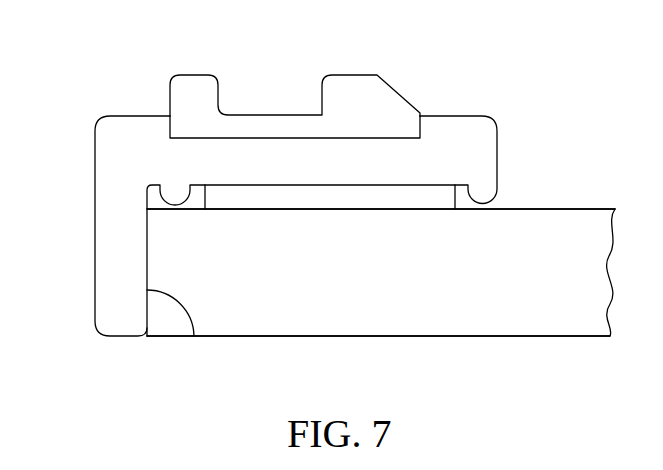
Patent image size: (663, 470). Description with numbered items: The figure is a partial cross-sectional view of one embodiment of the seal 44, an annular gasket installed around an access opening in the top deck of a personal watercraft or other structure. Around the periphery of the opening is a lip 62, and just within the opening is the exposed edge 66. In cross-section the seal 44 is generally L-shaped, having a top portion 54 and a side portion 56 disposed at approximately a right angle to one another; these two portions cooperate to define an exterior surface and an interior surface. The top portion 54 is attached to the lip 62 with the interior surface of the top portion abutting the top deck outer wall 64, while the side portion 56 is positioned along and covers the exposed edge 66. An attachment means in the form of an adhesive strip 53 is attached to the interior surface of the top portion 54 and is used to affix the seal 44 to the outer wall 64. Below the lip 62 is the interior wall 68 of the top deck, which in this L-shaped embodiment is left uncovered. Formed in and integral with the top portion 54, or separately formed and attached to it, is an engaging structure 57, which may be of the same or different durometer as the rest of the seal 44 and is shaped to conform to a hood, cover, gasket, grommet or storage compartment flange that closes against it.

The seal 44 is at (264, 181).
The adhesive strip 53 is at (428, 198).
The top portion 54 is at (450, 113).
The side portion 56 is at (112, 205).
The engaging structure 57 is at (348, 97).
The lip 62 is at (381, 274).
The top deck outer wall 64 is at (553, 209).
The exposed edge 66 is at (194, 336).
The interior wall 68 is at (503, 336).